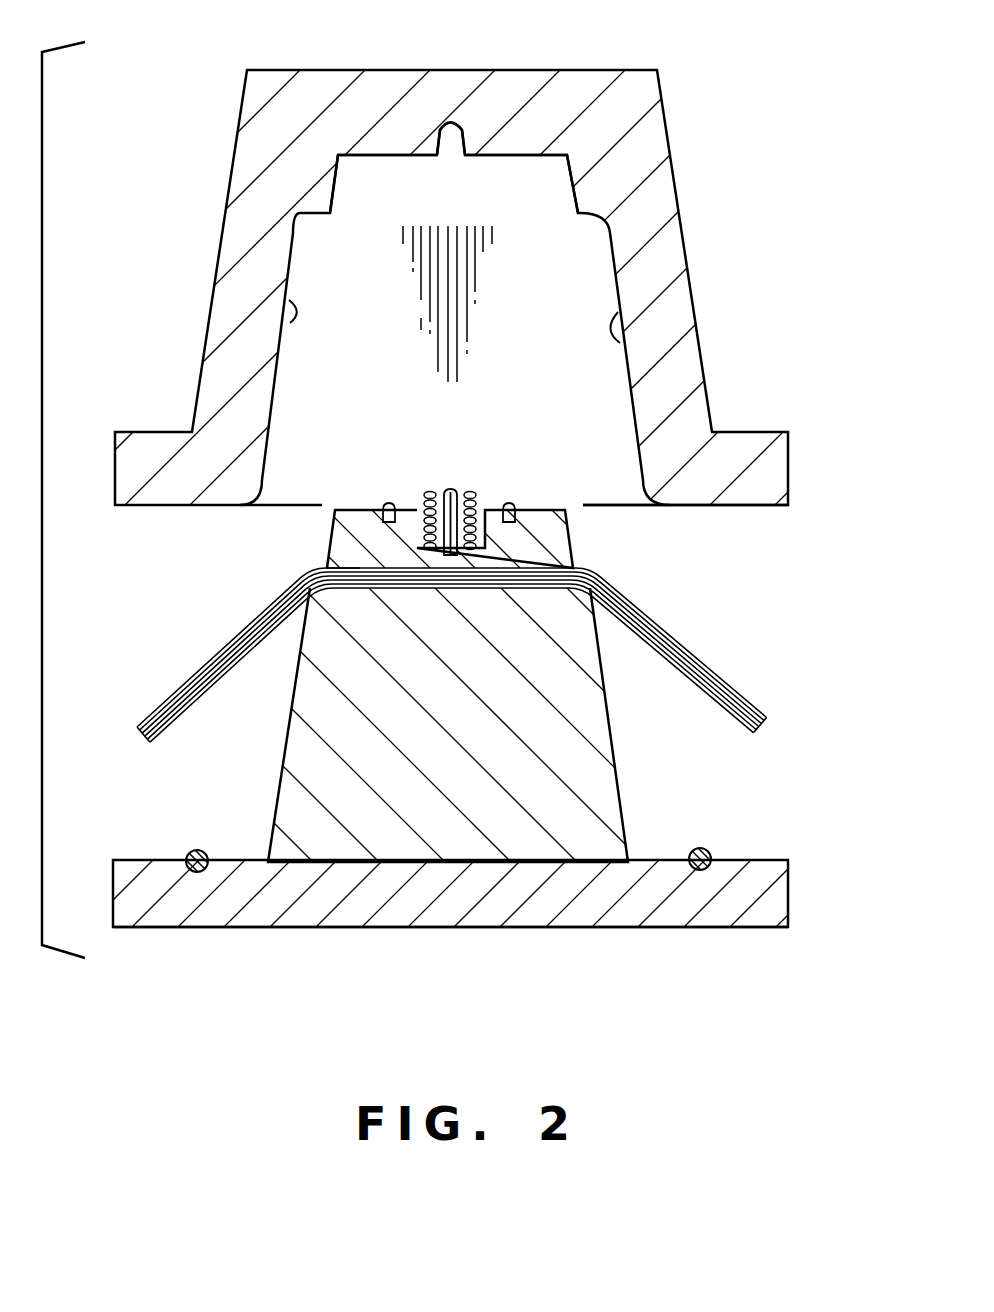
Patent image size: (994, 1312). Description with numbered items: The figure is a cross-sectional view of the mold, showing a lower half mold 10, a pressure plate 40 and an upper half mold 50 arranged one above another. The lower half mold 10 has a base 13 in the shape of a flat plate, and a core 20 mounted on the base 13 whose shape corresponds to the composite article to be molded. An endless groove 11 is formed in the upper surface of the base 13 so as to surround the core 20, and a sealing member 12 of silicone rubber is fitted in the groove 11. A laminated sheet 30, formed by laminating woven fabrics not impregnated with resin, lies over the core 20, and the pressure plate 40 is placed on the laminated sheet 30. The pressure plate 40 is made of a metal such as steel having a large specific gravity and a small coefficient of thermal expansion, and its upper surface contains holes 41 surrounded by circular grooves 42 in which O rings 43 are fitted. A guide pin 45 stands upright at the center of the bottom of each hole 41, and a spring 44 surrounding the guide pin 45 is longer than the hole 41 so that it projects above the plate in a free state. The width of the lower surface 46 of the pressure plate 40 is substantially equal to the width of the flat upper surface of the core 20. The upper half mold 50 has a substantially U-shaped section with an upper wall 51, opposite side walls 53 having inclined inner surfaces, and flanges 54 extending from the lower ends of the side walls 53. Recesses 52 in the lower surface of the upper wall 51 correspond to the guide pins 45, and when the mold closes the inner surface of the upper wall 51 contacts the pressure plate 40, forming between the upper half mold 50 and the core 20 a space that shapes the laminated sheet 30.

The lower half mold 10 is at (642, 932).
The endless groove 11 is at (692, 877).
The sealing member 12 is at (706, 851).
The base 13 is at (455, 905).
The core 20 is at (592, 722).
The laminated sheet 30 is at (712, 667).
The pressure plate 40 is at (560, 542).
The holes 41 is at (478, 500).
The circular grooves 42 is at (513, 527).
The O rings 43 is at (509, 503).
The spring 44 is at (428, 490).
The guide pin 45 is at (450, 489).
The lower surface 46 is at (358, 568).
The upper half mold 50 is at (525, 85).
The upper wall 51 is at (386, 170).
The recesses 52 is at (445, 138).
The side walls 53 is at (290, 305).
The flanges 54 is at (752, 508).